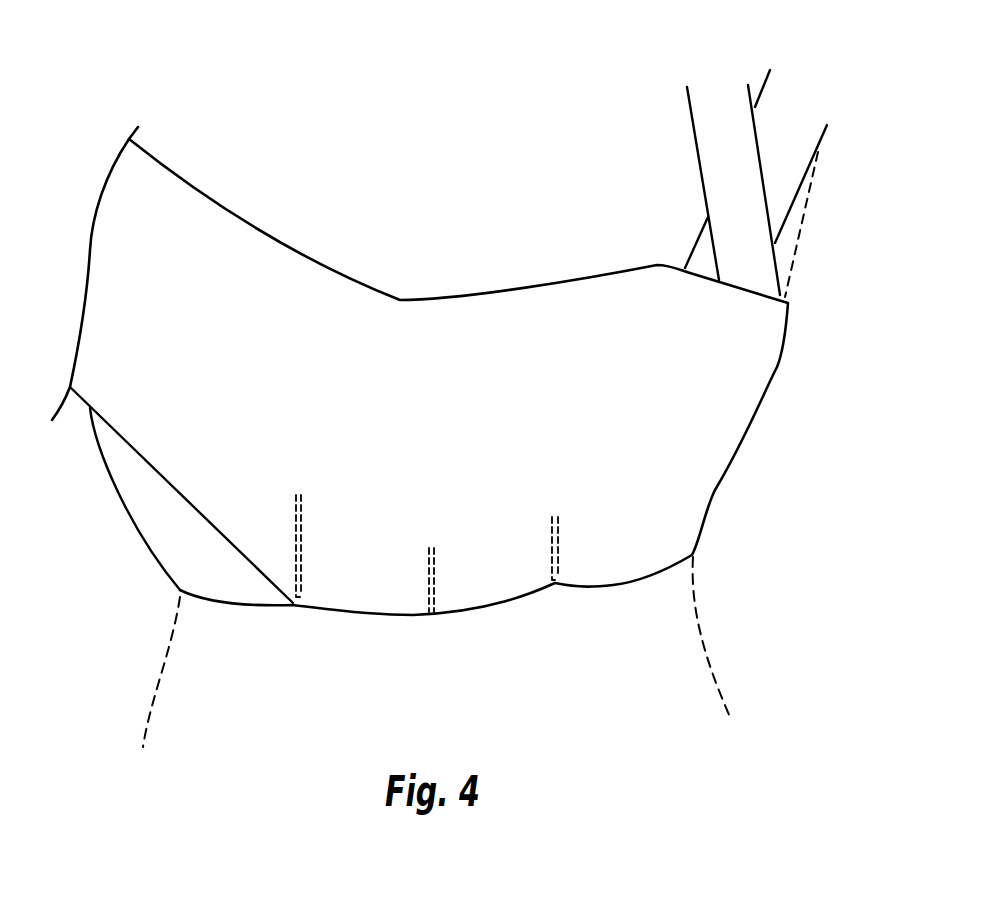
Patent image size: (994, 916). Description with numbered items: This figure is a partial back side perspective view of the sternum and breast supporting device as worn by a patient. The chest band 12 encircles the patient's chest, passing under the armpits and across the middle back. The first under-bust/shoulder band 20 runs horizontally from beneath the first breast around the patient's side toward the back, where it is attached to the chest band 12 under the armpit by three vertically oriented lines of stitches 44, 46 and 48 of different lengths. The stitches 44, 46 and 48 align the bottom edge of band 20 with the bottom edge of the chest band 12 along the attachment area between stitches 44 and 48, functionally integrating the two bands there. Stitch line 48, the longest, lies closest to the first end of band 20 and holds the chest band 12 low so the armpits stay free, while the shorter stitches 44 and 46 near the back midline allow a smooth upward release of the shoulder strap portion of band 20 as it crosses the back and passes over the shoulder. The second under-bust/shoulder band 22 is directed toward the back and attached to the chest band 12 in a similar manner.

The chest band 12 is at (750, 402).
The first under-bust/shoulder band 20 is at (152, 518).
The second under-bust/shoulder band 22 is at (712, 118).
The line of stitches 44 is at (558, 562).
The line of stitches 46 is at (433, 588).
The stitch line 48 is at (303, 585).